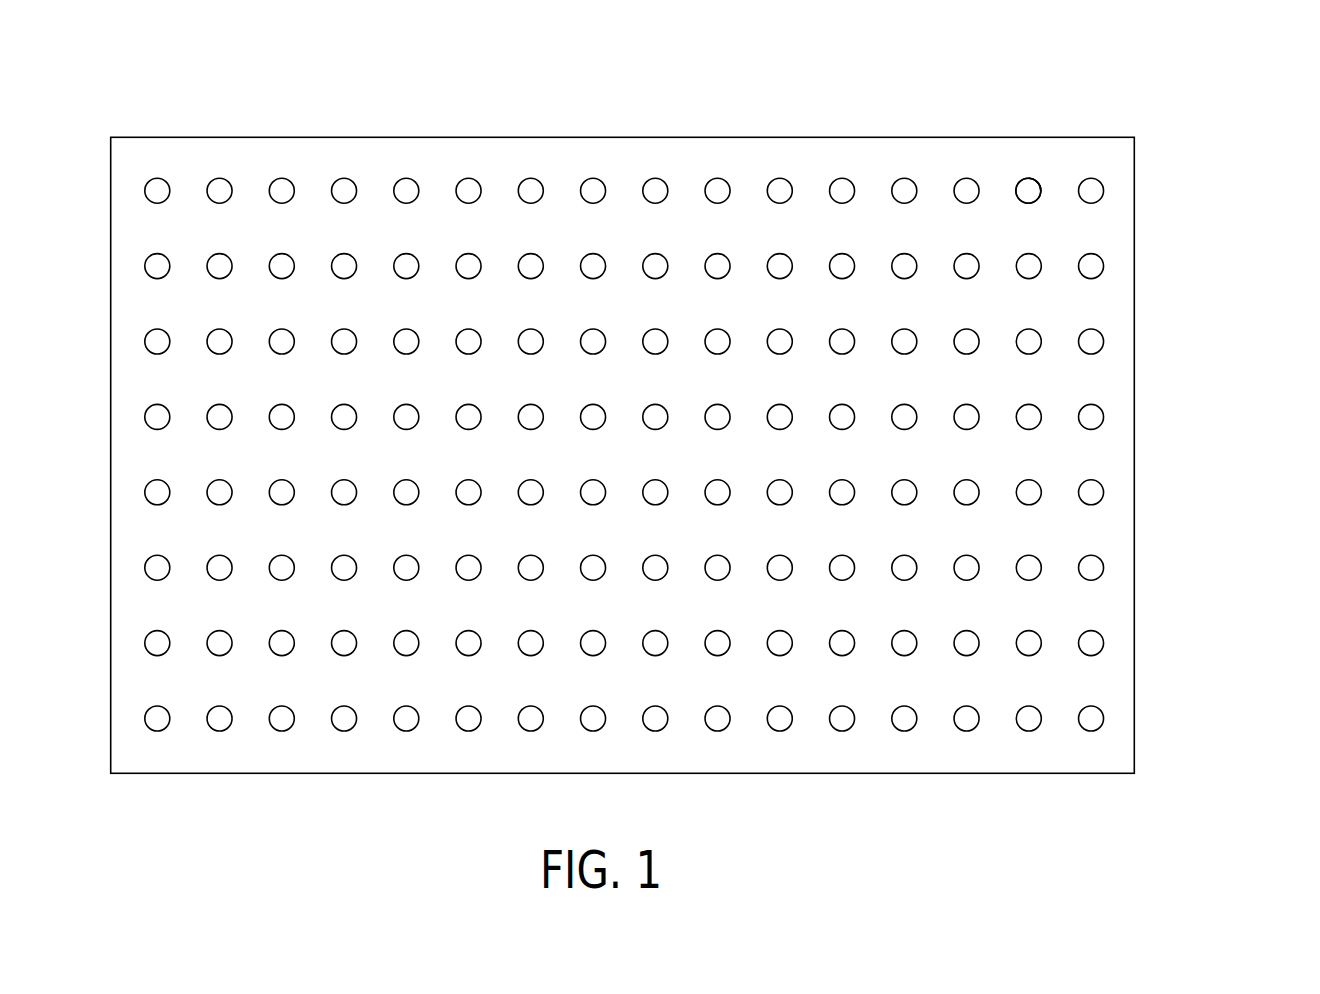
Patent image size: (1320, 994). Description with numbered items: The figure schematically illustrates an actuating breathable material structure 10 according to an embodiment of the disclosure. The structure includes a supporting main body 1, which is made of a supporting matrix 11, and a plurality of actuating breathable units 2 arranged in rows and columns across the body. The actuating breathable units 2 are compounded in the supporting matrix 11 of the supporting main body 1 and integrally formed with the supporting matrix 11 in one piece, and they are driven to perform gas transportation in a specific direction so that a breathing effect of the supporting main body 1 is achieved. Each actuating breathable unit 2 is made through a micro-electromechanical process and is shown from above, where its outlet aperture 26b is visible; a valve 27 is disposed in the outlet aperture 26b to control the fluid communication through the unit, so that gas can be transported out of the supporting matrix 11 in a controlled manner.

The actuating breathable material structure 10 is at (1293, 86).
The supporting main body 1 is at (660, 455).
The supporting matrix 11 is at (1121, 300).
The actuating breathable unit 2 is at (1048, 151).
The outlet aperture 26b is at (1037, 178).
The valve 27 is at (1028, 186).